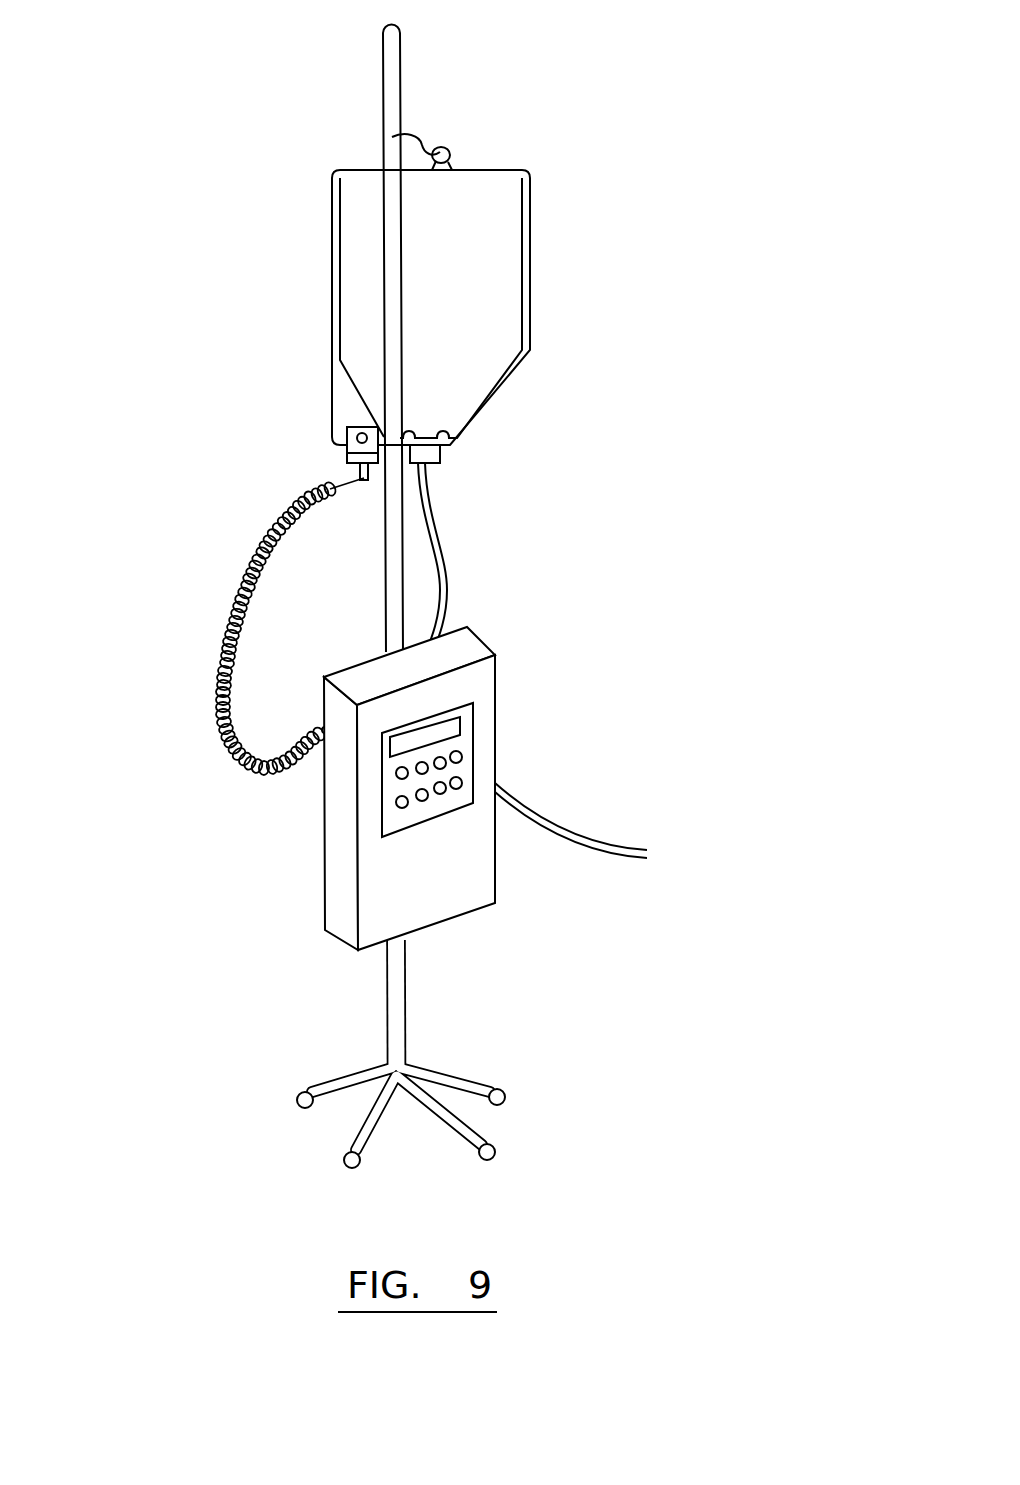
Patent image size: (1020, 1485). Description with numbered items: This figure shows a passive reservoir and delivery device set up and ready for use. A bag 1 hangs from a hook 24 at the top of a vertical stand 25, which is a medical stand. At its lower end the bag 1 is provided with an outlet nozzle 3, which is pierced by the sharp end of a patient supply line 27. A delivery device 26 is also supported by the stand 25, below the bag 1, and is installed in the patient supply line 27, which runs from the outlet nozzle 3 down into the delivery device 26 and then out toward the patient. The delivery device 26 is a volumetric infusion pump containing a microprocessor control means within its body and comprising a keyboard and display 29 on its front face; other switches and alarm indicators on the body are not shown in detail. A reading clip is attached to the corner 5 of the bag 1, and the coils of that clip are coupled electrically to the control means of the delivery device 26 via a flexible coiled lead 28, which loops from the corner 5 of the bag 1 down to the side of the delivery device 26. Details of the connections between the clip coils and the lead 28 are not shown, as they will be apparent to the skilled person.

The bag 1 is at (500, 277).
The outlet nozzle 3 is at (440, 457).
The corner 5 is at (340, 403).
The hook 24 is at (450, 147).
The vertical stand 25 is at (383, 72).
The delivery device 26 is at (337, 875).
The patient supply line 27 is at (443, 555).
The flexible coiled lead 28 is at (237, 593).
The keyboard and display 29 is at (473, 752).